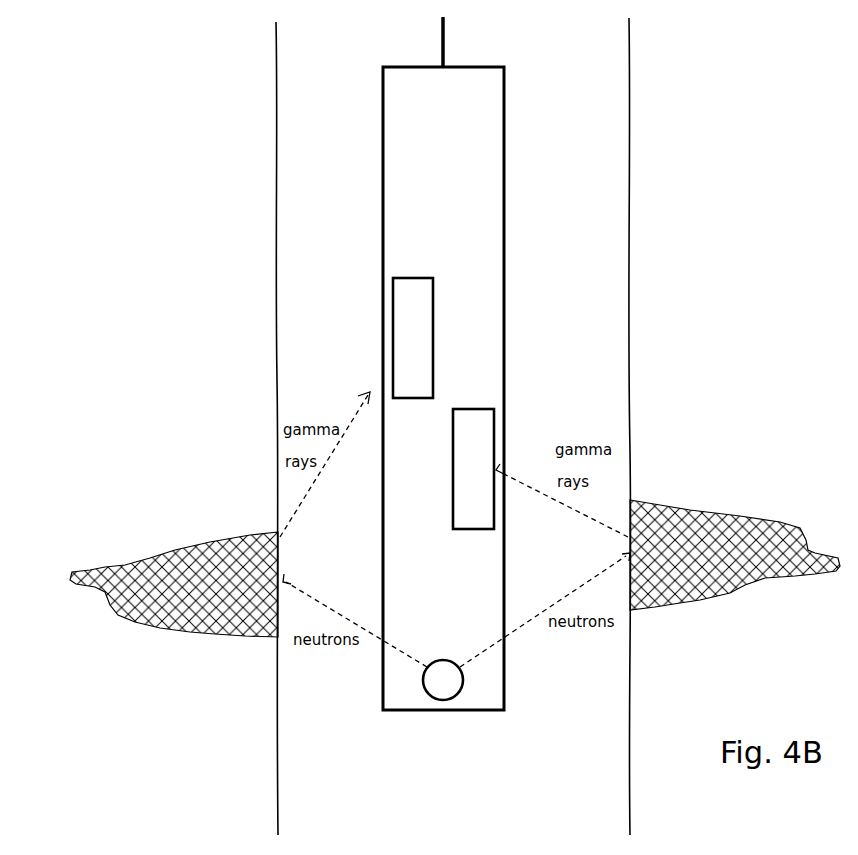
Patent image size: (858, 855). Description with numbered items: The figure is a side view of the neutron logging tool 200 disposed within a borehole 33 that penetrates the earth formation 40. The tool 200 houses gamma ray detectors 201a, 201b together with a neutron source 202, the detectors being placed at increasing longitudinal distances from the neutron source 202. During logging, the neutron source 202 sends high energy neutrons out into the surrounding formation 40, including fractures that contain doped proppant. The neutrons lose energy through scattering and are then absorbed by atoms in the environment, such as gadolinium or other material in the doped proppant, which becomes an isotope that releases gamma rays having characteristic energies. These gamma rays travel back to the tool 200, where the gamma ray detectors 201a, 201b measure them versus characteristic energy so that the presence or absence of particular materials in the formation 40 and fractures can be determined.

The borehole 33 is at (628, 150).
The earth formation 40 is at (455, 454).
The neutron logging tool 200 is at (362, 190).
The gamma ray detector 201a is at (493, 448).
The gamma ray detector 201b is at (431, 331).
The neutron source 202 is at (445, 700).